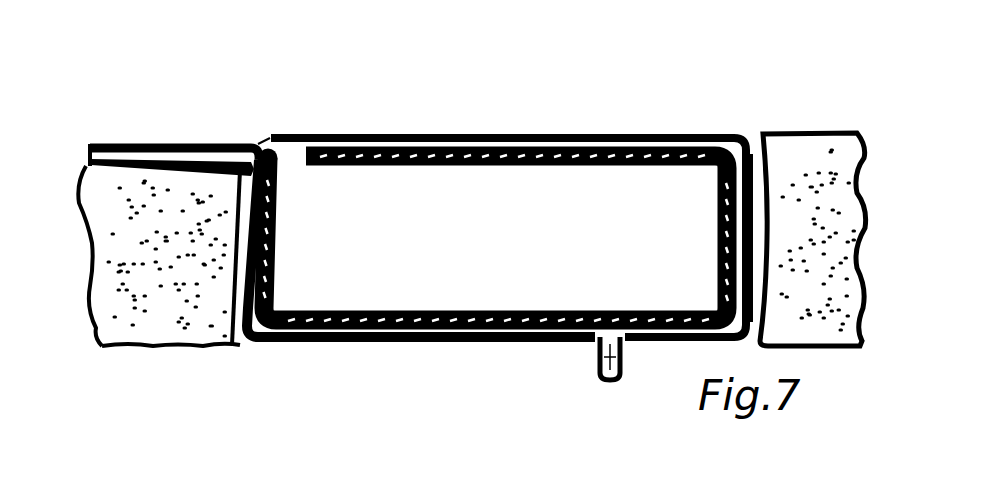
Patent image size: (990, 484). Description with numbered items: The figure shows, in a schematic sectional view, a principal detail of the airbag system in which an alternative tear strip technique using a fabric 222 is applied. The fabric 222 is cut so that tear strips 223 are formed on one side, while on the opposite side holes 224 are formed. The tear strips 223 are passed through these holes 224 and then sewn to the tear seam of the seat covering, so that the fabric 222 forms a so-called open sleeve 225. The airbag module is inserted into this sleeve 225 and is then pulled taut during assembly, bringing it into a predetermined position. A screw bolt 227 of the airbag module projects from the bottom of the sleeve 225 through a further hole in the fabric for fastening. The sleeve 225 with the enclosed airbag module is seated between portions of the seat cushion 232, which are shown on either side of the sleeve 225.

The fabric 222 is at (458, 126).
The tear strips 223 is at (155, 136).
The holes 224 is at (262, 127).
The sleeve 225 is at (398, 334).
The screw bolt 227 is at (598, 375).
The seat cushion 232 is at (150, 315).